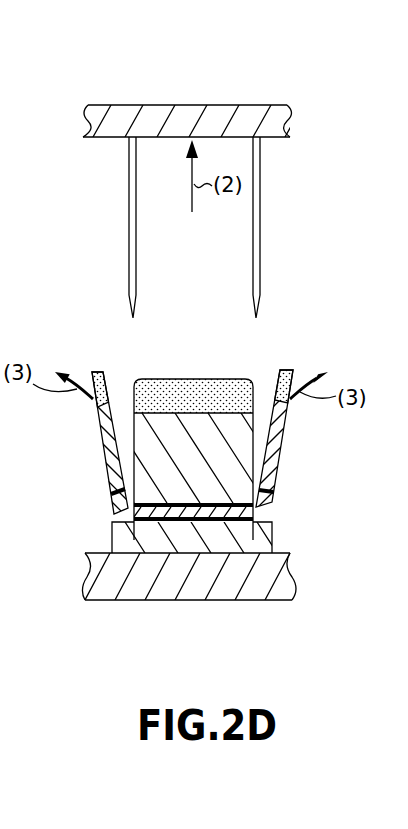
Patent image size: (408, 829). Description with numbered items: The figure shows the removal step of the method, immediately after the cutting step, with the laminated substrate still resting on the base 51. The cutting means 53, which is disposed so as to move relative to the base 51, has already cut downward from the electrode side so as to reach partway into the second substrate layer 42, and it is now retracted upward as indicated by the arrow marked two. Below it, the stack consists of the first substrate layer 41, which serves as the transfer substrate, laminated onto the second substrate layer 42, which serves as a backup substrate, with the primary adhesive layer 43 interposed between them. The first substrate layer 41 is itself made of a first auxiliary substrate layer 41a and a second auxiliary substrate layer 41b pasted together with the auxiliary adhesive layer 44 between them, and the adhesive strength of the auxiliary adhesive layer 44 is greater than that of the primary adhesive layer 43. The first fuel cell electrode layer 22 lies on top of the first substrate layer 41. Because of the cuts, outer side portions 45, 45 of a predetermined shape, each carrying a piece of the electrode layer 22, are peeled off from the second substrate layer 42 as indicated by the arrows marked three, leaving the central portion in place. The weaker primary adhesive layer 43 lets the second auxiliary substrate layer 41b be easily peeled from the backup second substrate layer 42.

The first fuel cell electrode layer 22 is at (96, 372).
The first substrate layer 41 is at (192, 418).
The first auxiliary substrate layer 41a is at (179, 425).
The second auxiliary substrate layer 41b is at (197, 500).
The second substrate layer 42 is at (115, 538).
The primary adhesive layer 43 is at (110, 518).
The auxiliary adhesive layer 44 is at (222, 508).
The outer side portion 45 is at (98, 462).
The base 51 is at (137, 600).
The cutting means 53 is at (252, 232).